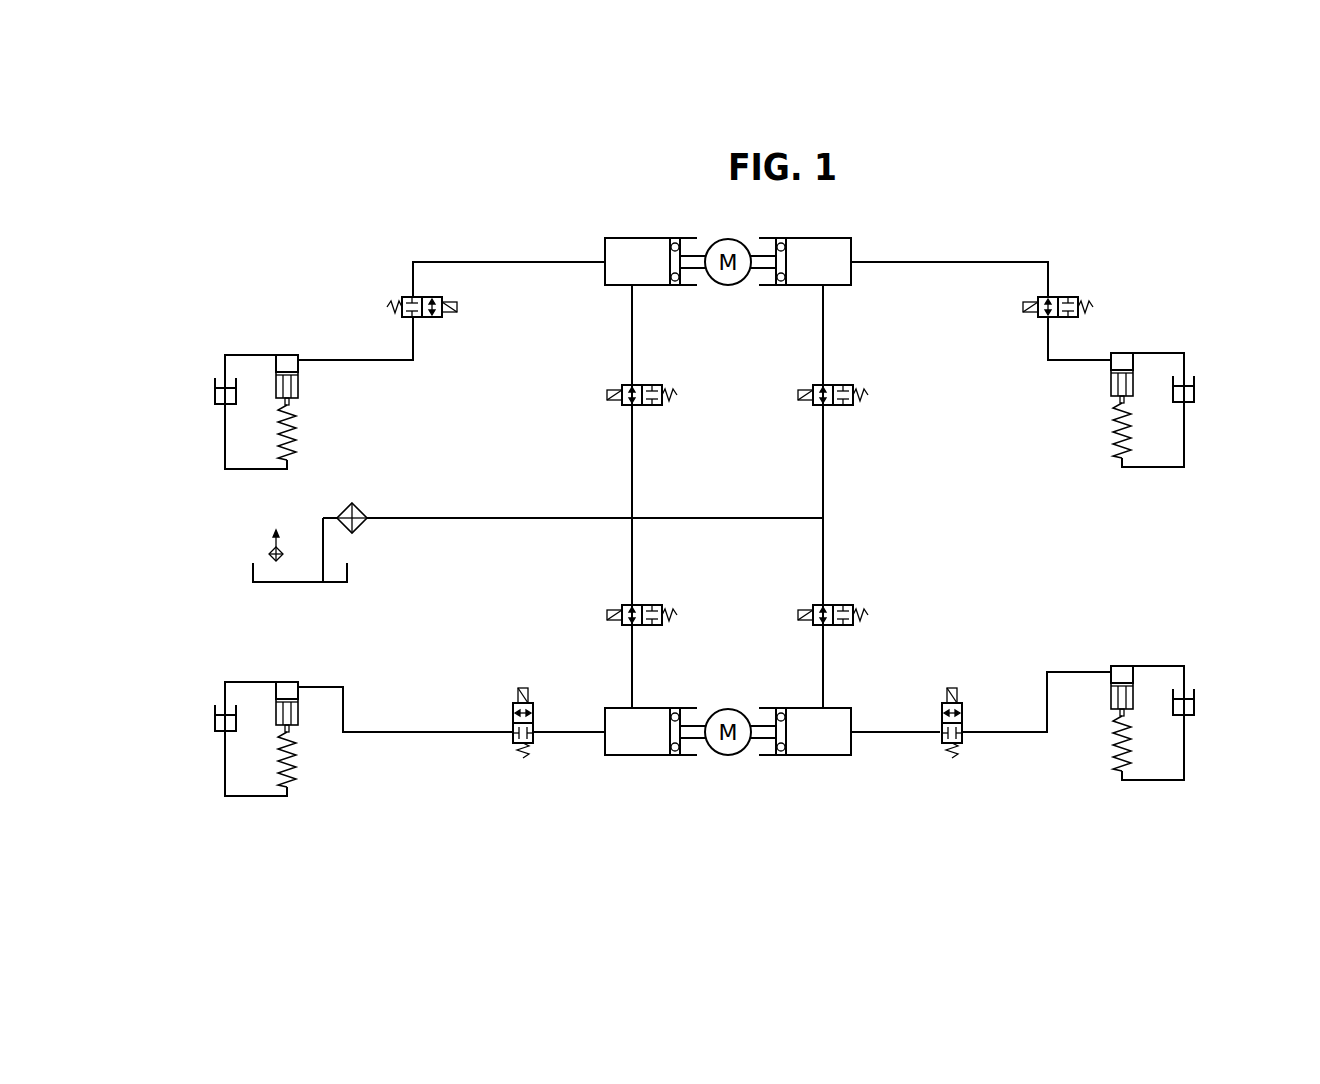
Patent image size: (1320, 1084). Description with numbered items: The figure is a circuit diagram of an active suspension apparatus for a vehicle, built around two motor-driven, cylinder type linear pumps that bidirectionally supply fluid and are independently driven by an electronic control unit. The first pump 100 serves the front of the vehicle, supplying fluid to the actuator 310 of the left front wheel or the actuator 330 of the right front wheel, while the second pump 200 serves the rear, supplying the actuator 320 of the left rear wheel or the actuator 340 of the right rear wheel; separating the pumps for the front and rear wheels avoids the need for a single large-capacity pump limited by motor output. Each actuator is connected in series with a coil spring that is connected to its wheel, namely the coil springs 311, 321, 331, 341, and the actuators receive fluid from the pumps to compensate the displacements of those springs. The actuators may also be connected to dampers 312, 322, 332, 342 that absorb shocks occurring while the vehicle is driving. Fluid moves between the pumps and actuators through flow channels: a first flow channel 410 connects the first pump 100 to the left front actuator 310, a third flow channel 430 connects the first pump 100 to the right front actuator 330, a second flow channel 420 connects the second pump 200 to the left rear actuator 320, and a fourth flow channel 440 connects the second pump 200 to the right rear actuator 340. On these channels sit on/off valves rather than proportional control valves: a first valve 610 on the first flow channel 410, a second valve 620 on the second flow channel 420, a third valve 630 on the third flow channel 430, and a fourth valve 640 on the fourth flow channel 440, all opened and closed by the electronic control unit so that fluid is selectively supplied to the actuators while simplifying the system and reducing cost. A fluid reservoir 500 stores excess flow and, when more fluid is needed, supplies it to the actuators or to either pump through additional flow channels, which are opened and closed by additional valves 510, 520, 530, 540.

The first pump 100 is at (660, 238).
The second pump 200 is at (790, 757).
The actuator 310 is at (276, 362).
The coil spring 311 is at (298, 440).
The damper 312 is at (214, 397).
The actuator 320 is at (276, 690).
The coil spring 321 is at (298, 767).
The damper 322 is at (214, 724).
The actuator 330 is at (1127, 355).
The coil spring 331 is at (1112, 438).
The damper 332 is at (1196, 395).
The actuator 340 is at (1127, 666).
The coil spring 341 is at (1112, 755).
The damper 342 is at (1196, 709).
The first flow channel 410 is at (505, 262).
The second flow channel 420 is at (410, 732).
The third flow channel 430 is at (905, 262).
The fourth flow channel 440 is at (900, 734).
The fluid reservoir 500 is at (275, 548).
The additional valve 510 is at (622, 385).
The additional valve 520 is at (622, 605).
The additional valve 530 is at (813, 385).
The additional valve 540 is at (813, 605).
The first valve 610 is at (402, 297).
The second valve 620 is at (513, 705).
The third valve 630 is at (1060, 297).
The fourth valve 640 is at (962, 740).